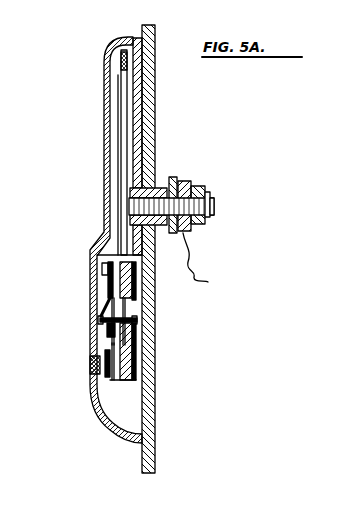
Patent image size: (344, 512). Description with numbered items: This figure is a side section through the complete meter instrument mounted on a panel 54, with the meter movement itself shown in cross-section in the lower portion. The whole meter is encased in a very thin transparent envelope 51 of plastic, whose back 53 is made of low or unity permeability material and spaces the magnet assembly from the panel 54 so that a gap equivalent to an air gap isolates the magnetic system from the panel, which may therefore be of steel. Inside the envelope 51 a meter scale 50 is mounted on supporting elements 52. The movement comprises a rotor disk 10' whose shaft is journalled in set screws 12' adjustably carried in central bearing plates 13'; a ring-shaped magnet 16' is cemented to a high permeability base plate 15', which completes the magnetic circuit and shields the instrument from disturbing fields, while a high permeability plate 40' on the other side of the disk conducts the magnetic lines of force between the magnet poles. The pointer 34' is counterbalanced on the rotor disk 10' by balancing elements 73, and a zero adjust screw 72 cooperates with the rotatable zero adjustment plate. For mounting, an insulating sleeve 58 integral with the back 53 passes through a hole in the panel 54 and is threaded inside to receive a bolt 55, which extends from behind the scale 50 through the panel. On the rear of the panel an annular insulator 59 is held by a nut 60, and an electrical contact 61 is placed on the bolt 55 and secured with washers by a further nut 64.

The supporting elements 52 is at (128, 70).
The meter scale 50 is at (124, 160).
The back of the meter case 53 is at (150, 185).
The annular insulator 59 is at (161, 190).
The nut 60 is at (180, 178).
The sleeve 58 is at (191, 187).
The nut 64 is at (206, 193).
The bolt 55 is at (214, 205).
The electrical contact 61 is at (185, 235).
The pointer 34' is at (105, 240).
The rotor disk 10' is at (65, 253).
The plate 40' is at (85, 289).
The central bearing plates 13' is at (118, 321).
The set screws 12' is at (118, 323).
The ring-shaped magnet 16' is at (151, 281).
The base plate 15' is at (148, 351).
The balancing elements 73 is at (92, 365).
The zero adjust screw 72 is at (89, 385).
The transparent envelope 51 is at (94, 416).
The panel 54 is at (152, 402).